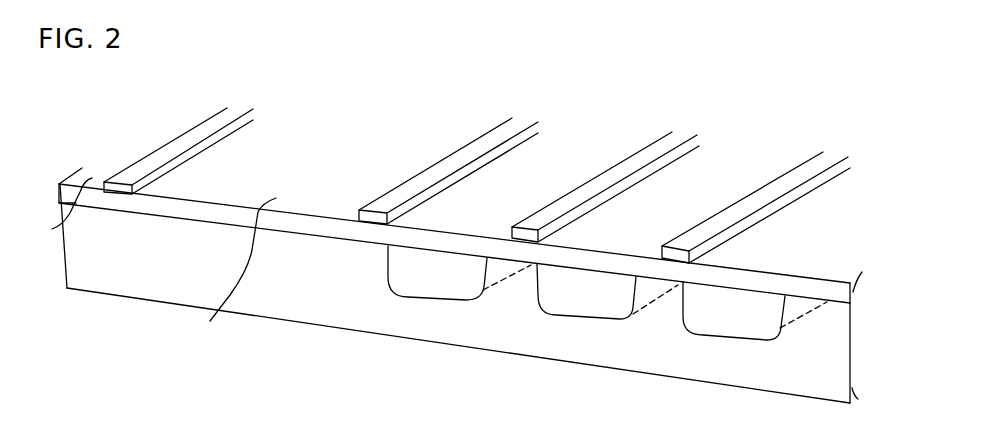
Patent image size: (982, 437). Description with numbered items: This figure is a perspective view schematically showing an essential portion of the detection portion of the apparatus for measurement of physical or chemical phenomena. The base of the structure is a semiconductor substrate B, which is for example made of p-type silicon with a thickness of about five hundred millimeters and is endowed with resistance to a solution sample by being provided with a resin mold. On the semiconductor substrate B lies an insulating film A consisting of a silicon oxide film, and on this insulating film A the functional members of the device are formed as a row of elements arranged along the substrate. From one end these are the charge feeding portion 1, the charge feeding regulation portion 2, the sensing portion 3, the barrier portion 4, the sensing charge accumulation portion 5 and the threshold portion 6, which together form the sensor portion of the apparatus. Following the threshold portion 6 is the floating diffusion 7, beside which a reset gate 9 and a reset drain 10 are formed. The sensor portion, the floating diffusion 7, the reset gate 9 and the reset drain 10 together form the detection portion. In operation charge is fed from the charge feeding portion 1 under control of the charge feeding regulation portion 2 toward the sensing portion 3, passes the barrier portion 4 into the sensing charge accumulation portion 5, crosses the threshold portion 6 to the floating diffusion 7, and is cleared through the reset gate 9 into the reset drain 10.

The charge feeding portion 1 is at (63, 228).
The charge feeding regulation portion 2 is at (187, 132).
The sensing portion 3 is at (454, 267).
The barrier portion 4 is at (475, 147).
The sensing charge accumulation portion 5 is at (408, 277).
The threshold portion 6 is at (620, 163).
The floating diffusion 7 is at (555, 295).
The reset gate 9 is at (770, 185).
The reset drain 10 is at (767, 318).
The insulating film A is at (795, 287).
The semiconductor substrate B is at (103, 282).